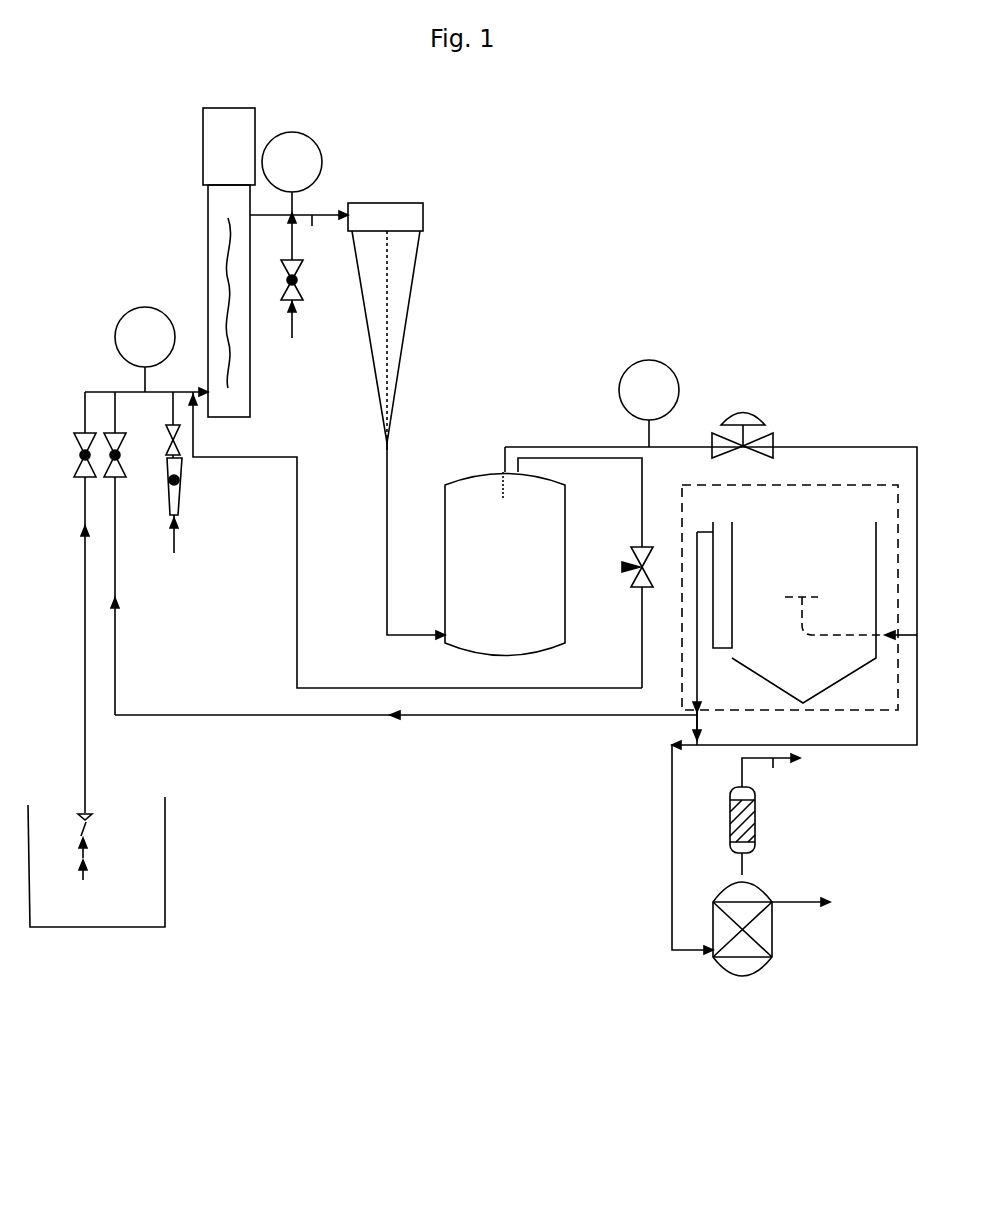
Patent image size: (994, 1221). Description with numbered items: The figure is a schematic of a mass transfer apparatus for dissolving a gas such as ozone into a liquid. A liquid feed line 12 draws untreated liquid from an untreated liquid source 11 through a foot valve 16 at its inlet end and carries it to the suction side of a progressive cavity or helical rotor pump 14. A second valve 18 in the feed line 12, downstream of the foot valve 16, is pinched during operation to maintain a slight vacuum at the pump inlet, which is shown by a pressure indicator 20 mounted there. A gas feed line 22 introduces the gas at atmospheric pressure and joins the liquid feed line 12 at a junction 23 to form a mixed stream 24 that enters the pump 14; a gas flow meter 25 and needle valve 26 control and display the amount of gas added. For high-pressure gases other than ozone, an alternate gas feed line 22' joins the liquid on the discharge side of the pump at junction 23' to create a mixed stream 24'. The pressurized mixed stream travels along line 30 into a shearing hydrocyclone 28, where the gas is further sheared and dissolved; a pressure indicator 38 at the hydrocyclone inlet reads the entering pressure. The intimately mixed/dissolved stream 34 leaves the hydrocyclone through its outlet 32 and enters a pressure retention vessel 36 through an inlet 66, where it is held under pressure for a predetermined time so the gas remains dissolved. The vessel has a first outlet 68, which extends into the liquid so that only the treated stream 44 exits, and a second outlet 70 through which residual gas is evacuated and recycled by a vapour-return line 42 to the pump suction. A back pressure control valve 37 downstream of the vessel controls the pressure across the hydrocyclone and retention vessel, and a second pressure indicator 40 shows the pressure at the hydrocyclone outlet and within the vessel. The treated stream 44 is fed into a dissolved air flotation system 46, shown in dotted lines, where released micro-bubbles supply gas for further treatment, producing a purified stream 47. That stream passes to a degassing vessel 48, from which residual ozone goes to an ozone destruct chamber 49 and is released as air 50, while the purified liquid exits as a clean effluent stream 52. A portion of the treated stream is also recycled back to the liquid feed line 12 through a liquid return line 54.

The untreated liquid source 11 is at (100, 909).
The liquid feed line 12 is at (85, 650).
The progressive cavity or helical rotor pump 14 is at (203, 180).
The foot valve 16 is at (92, 828).
The second valve 18 is at (75, 455).
The pressure indicator 20 is at (136, 307).
The gas feed line 22 is at (186, 538).
The gas feed line 22' is at (301, 290).
The junction 23 is at (146, 382).
The junction 23' is at (299, 203).
The mixed stream 24 is at (411, 522).
The mixed stream 24' is at (310, 229).
The gas flow meter 25 is at (182, 497).
The needle valve 26 is at (166, 440).
The shearing hydrocyclone 28 is at (426, 235).
The line 30 is at (345, 216).
The outlet 32 is at (393, 446).
The intimately mixed/dissolved stream 34 is at (382, 540).
The pressure retention vessel 36 is at (445, 567).
The back pressure control valve 37 is at (745, 412).
The pressure indicator 38 is at (298, 133).
The second pressure indicator 40 is at (647, 362).
The vapour-return line 42 is at (642, 490).
The treated stream 44 is at (548, 445).
The dissolved air flotation system 46 is at (857, 483).
The purified stream 47 is at (693, 729).
The degassing vessel 48 is at (713, 968).
The ozone destruct chamber 49 is at (757, 840).
The air 50 is at (771, 770).
The clean effluent stream 52 is at (803, 899).
The liquid return line 54 is at (408, 720).
The inlet 66 is at (447, 645).
The first outlet 68 is at (500, 462).
The second outlet 70 is at (520, 469).